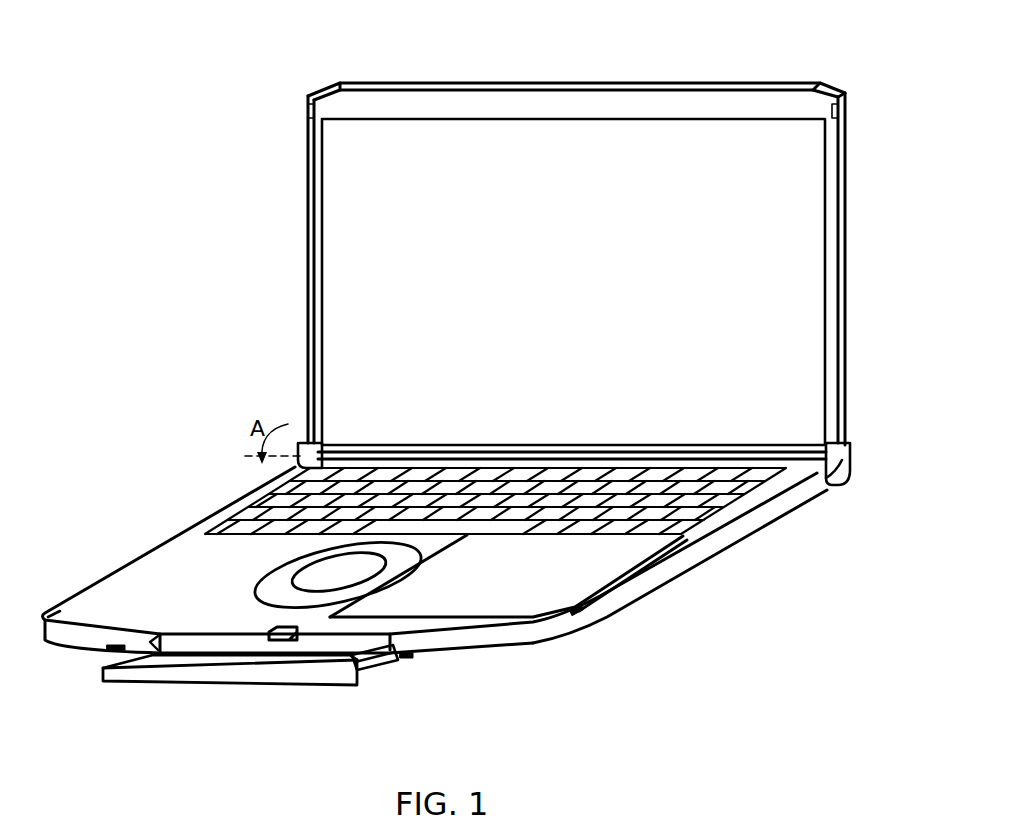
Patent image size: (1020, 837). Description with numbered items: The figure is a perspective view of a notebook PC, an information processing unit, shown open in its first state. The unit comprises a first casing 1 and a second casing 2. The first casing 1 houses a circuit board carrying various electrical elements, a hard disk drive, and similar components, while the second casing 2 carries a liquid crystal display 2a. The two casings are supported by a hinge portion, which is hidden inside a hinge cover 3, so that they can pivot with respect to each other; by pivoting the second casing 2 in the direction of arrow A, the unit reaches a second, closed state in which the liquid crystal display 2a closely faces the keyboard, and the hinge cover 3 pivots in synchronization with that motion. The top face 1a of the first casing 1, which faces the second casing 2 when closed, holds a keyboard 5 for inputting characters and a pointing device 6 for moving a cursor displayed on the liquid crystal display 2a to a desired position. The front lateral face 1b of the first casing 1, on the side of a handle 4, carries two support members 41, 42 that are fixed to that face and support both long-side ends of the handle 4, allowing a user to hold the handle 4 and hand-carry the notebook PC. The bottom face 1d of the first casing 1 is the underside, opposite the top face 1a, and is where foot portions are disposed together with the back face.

The first casing 1 is at (700, 560).
The top face 1a is at (118, 595).
The lateral face 1b is at (204, 637).
The bottom face 1d is at (645, 600).
The second casing 2 is at (713, 84).
The liquid crystal display 2a is at (565, 155).
The hinge cover 3 is at (843, 484).
The handle 4 is at (243, 672).
The support member 41 is at (65, 645).
The support member 42 is at (432, 658).
The keyboard 5 is at (721, 501).
The pointing device 6 is at (317, 578).